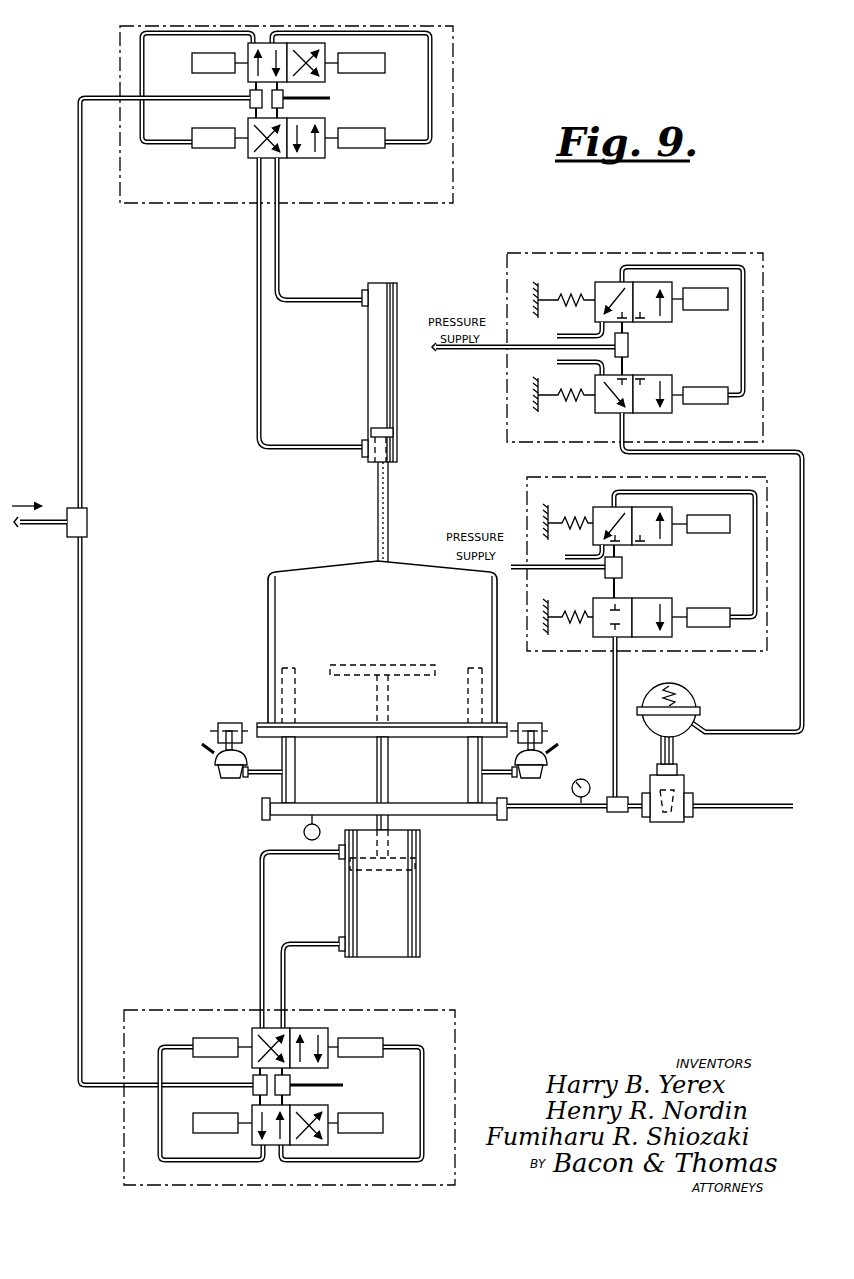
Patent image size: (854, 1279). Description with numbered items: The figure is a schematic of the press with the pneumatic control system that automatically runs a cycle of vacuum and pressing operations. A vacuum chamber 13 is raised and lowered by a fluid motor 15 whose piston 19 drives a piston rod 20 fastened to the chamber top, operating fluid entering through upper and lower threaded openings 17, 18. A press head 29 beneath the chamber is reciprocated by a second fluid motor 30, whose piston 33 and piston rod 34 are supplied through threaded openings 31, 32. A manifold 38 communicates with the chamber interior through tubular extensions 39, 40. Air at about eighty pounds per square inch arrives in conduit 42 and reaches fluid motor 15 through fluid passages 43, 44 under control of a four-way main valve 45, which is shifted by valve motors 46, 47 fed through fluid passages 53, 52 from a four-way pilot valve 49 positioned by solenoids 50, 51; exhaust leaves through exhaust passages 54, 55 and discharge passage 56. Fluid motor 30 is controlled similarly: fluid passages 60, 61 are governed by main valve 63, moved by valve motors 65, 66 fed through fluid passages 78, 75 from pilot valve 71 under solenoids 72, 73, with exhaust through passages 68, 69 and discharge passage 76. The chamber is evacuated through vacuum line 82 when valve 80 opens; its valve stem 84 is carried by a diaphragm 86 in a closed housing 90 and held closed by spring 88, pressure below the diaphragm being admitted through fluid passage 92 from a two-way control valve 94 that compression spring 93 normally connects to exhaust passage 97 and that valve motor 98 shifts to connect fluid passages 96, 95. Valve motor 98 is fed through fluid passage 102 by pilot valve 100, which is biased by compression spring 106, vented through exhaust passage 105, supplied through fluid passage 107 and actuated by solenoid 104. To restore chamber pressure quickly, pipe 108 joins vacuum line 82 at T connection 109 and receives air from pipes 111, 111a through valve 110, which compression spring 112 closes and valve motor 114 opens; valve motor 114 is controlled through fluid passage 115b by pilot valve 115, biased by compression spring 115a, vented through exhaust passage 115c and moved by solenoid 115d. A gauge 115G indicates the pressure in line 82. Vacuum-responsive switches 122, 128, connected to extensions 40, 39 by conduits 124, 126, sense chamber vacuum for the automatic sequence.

The vacuum chamber 13 is at (268, 596).
The fluid motor 15 is at (386, 355).
The threaded opening 17 is at (361, 300).
The threaded opening 18 is at (362, 442).
The piston 19 is at (390, 415).
The piston rod 20 is at (388, 494).
The press head 29 is at (379, 665).
The fluid motor 30 is at (412, 914).
The threaded opening 31 is at (339, 855).
The threaded opening 32 is at (339, 943).
The piston 33 is at (410, 868).
The piston rod 34 is at (388, 757).
The manifold 38 is at (448, 816).
The tubular extension 39 is at (468, 747).
The tubular extension 40 is at (288, 751).
The conduit 42 is at (82, 290).
The fluid passage 43 is at (262, 377).
The fluid passage 44 is at (306, 297).
The main valve 45 is at (290, 156).
The valve motor 46 is at (196, 148).
The valve motor 47 is at (372, 148).
The pilot valve 49 is at (290, 44).
The solenoid 50 is at (191, 60).
The solenoid 51 is at (385, 60).
The fluid passage 52 is at (453, 80).
The fluid passage 53 is at (142, 70).
The exhaust passage 54 is at (283, 106).
The exhaust passage 55 is at (345, 104).
The discharge passage 56 is at (285, 92).
The fluid passage 60 is at (259, 905).
The fluid passage 61 is at (305, 946).
The main valve 63 is at (290, 1030).
The valve motor 65 is at (191, 1040).
The valve motor 66 is at (383, 1040).
The exhaust passage 68 is at (291, 1078).
The exhaust passage 69 is at (344, 1086).
The pilot valve 71 is at (290, 1150).
The solenoid 72 is at (193, 1120).
The solenoid 73 is at (355, 1133).
The fluid passage 75 is at (422, 1090).
The discharge passage 76 is at (286, 1104).
The fluid passage 78 is at (158, 1085).
The vacuum valve 80 is at (684, 792).
The vacuum line 82 is at (725, 802).
The valve stem 84 is at (674, 748).
The diaphragm 86 is at (682, 694).
The spring 88 is at (663, 690).
The closed housing 90 is at (697, 716).
The fluid passage 92 is at (800, 680).
The compression spring 93 is at (572, 400).
The control valve 94 is at (632, 406).
The fluid passage 95 is at (630, 368).
The fluid passage 96 is at (450, 351).
The exhaust passage 97 is at (558, 362).
The valve motor 98 is at (690, 405).
The pilot valve 100 is at (624, 288).
The fluid passage 102 is at (670, 266).
The solenoid 104 is at (693, 311).
The exhaust passage 105 is at (588, 333).
The compression spring 106 is at (574, 298).
The fluid passage 107 is at (628, 327).
The pipe 108 is at (612, 722).
The T connection 109 is at (615, 812).
The valve 110 is at (640, 602).
The pipe 111 is at (531, 570).
The pipe 111a is at (605, 570).
The compression spring 112 is at (575, 625).
The valve motor 114 is at (705, 627).
The pilot valve 115 is at (638, 545).
The compression spring 115a is at (570, 520).
The fluid passage 115b is at (755, 566).
The exhaust passage 115c is at (590, 557).
The solenoid 115d is at (690, 533).
The gauge 115G is at (572, 794).
The automatic switch 122 is at (228, 723).
The conduit 124 is at (252, 779).
The conduit 126 is at (495, 774).
The switch 128 is at (534, 723).